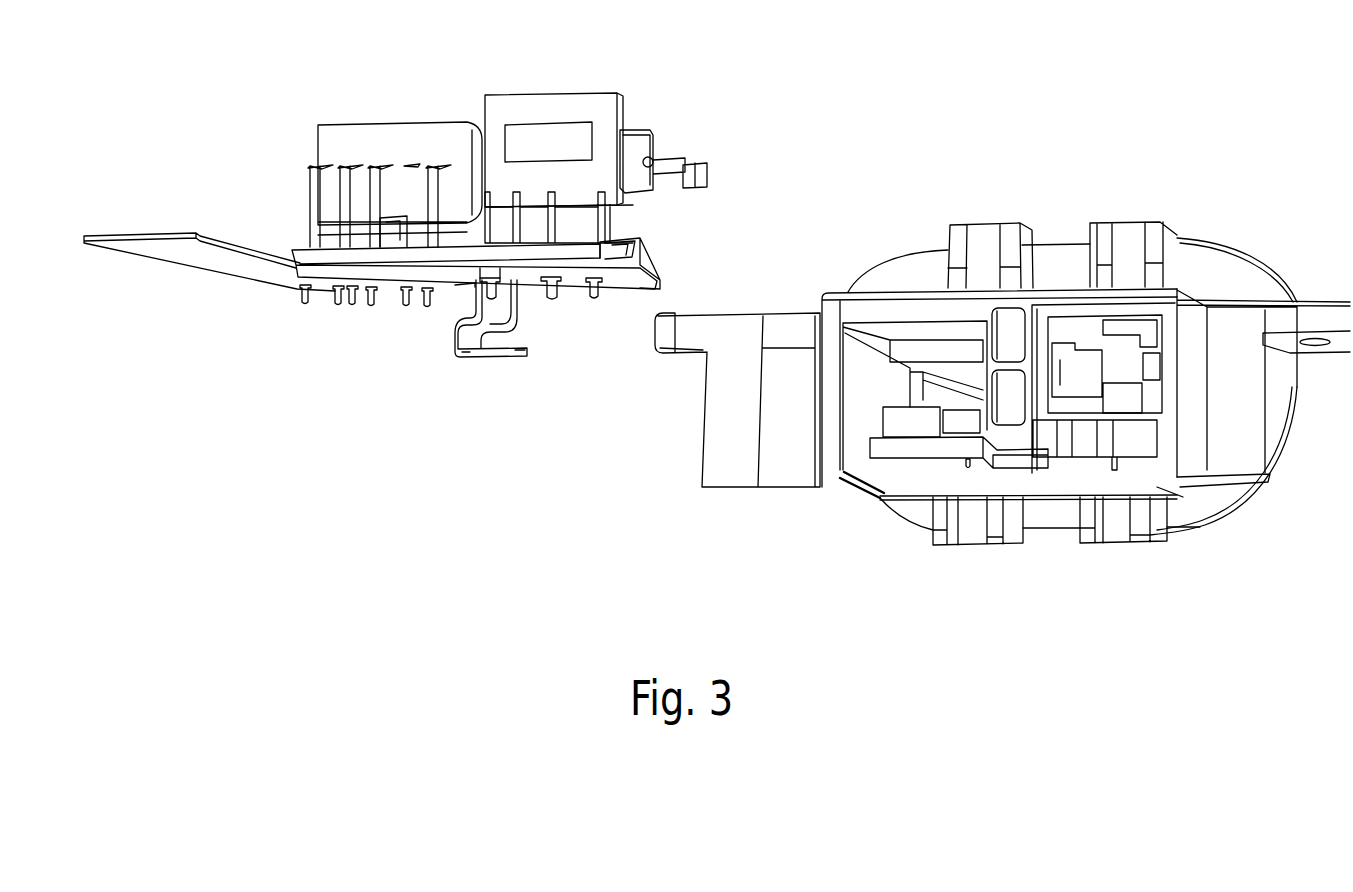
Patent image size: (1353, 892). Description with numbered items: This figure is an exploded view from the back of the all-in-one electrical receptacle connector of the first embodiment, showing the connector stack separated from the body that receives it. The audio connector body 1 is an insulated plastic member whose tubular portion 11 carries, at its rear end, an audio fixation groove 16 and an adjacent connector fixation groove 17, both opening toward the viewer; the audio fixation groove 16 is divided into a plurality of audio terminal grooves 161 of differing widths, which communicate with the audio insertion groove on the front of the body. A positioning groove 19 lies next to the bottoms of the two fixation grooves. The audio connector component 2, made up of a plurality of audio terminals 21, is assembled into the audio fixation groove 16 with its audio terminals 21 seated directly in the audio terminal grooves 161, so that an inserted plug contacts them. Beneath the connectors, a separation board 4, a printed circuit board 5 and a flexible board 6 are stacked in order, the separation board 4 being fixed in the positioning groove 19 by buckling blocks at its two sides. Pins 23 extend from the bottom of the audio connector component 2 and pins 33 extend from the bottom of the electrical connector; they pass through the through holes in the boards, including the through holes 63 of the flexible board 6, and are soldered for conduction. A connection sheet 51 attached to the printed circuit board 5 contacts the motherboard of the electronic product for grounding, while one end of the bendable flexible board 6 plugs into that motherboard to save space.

The audio connector body 1 is at (1077, 198).
The tubular portion 11 is at (930, 255).
The audio fixation groove 16 is at (1070, 634).
The audio terminal grooves 161 is at (1128, 402).
The connector fixation groove 17 is at (890, 378).
The positioning groove 19 is at (881, 498).
The audio connector component 2 is at (635, 106).
The audio terminals 21 is at (703, 167).
The pins 23 is at (550, 293).
The pins 33 is at (373, 174).
The separation board 4 is at (300, 254).
The printed circuit board 5 is at (650, 278).
The connection sheet 51 is at (473, 330).
The flexible board 6 is at (193, 263).
The through holes 63 is at (295, 288).